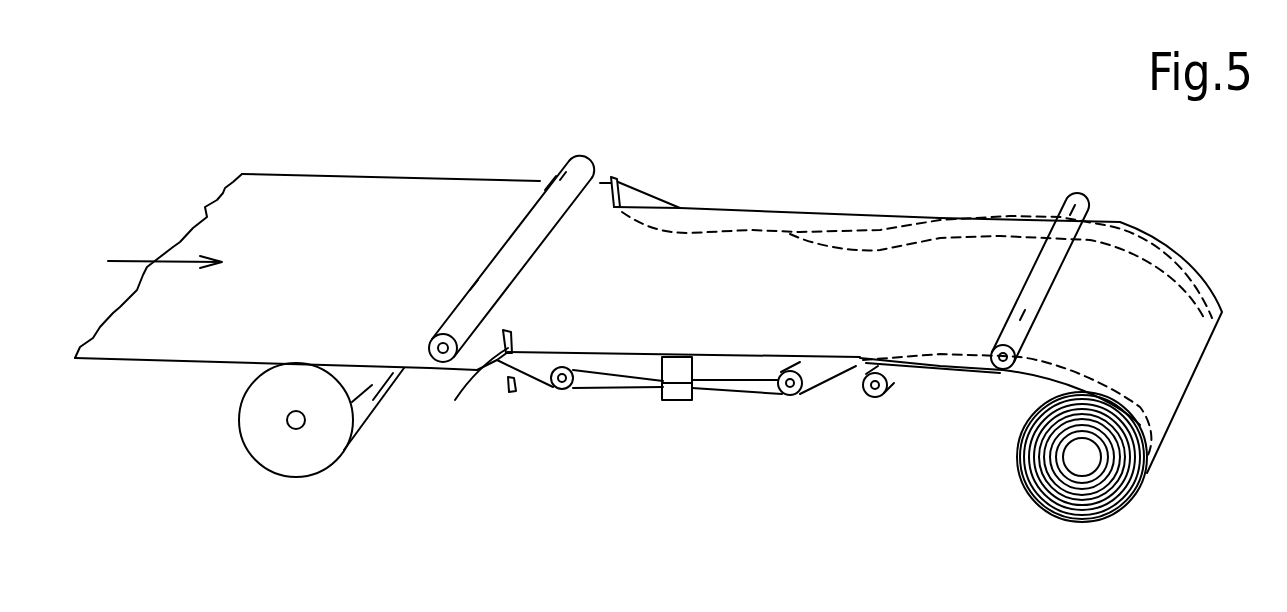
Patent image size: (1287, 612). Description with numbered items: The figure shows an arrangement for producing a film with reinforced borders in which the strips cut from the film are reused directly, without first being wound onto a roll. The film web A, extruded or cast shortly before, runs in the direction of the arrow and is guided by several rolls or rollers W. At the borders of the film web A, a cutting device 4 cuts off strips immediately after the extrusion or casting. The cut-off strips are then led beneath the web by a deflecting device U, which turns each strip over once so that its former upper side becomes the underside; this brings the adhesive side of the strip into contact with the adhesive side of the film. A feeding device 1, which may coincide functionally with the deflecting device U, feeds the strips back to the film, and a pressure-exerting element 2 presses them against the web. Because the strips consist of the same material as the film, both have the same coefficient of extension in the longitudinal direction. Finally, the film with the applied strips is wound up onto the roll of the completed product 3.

The film web A is at (325, 195).
The rolls or rollers W is at (530, 215).
The cutting device 4 is at (617, 183).
The deflecting device U is at (673, 402).
The feeding device 1 is at (796, 400).
The pressure-exerting element 2 is at (878, 400).
The roll of the completed product 3 is at (1147, 478).